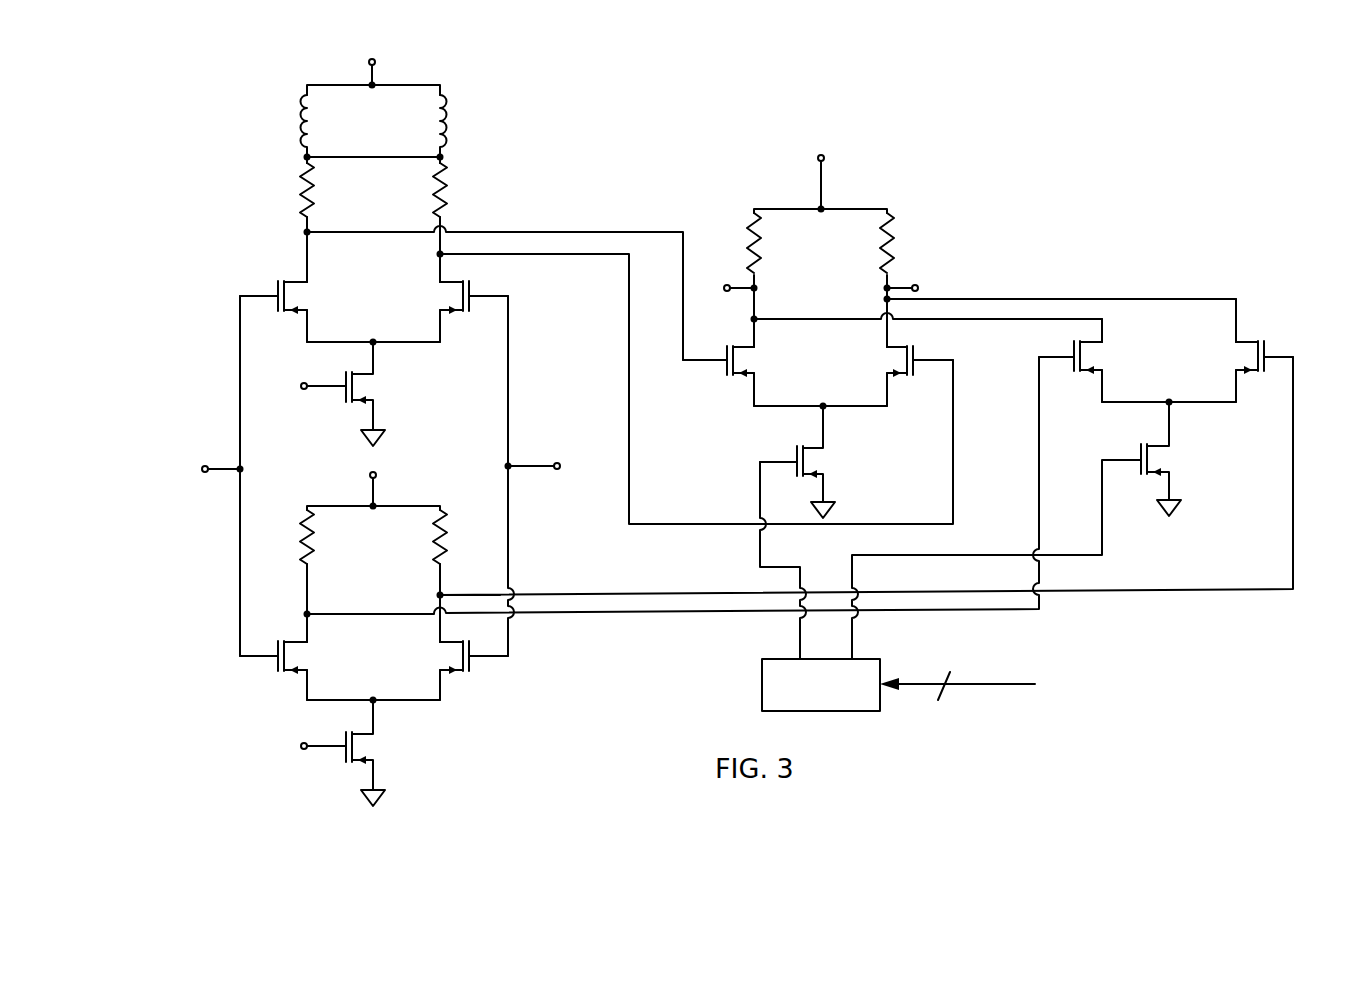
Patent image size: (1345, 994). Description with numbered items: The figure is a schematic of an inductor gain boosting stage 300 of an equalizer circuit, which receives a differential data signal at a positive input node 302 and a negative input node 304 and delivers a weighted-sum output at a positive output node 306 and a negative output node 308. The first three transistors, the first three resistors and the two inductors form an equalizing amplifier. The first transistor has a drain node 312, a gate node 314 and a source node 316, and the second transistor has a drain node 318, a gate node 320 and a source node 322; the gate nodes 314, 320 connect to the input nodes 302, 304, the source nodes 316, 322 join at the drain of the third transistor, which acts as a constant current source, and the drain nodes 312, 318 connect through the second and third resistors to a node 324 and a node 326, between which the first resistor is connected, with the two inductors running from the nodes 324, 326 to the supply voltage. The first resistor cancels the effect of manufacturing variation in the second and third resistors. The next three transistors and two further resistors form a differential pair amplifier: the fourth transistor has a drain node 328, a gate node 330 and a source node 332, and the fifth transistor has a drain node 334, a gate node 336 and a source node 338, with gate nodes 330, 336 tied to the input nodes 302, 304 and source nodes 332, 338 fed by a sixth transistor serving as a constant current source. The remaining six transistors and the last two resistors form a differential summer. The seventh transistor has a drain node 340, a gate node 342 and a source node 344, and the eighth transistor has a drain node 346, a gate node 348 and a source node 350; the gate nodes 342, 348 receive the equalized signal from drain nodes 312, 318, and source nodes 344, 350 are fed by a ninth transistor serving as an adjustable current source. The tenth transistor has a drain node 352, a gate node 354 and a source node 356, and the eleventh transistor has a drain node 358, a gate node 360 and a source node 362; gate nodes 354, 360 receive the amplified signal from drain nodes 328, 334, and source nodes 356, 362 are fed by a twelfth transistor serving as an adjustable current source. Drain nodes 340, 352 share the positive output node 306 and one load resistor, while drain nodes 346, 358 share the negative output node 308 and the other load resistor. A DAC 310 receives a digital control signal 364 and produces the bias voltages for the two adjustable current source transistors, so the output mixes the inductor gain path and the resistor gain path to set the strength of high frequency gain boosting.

The inductor gain boosting stage 300 is at (784, 68).
The positive input node 302 is at (205, 473).
The negative input node 304 is at (557, 470).
The positive output node 306 is at (725, 287).
The negative output node 308 is at (918, 287).
The DAC 310 is at (762, 684).
The drain node 312 is at (309, 248).
The gate node 314 is at (260, 296).
The source node 316 is at (309, 330).
The drain node 318 is at (439, 257).
The gate node 320 is at (488, 294).
The source node 322 is at (440, 325).
The node 324 is at (304, 157).
The node 326 is at (443, 157).
The drain node 328 is at (308, 638).
The gate node 330 is at (262, 660).
The source node 332 is at (309, 690).
The drain node 334 is at (439, 636).
The gate node 336 is at (480, 658).
The source node 338 is at (441, 690).
The drain node 340 is at (752, 321).
The gate node 342 is at (712, 362).
The source node 344 is at (757, 396).
The drain node 346 is at (886, 322).
The gate node 348 is at (935, 360).
The source node 350 is at (855, 407).
The drain node 352 is at (1103, 326).
The gate node 354 is at (1058, 357).
The source node 356 is at (1103, 392).
The drain node 358 is at (1237, 320).
The gate node 360 is at (1295, 357).
The source node 362 is at (1235, 392).
The digital control signal 364 is at (980, 684).